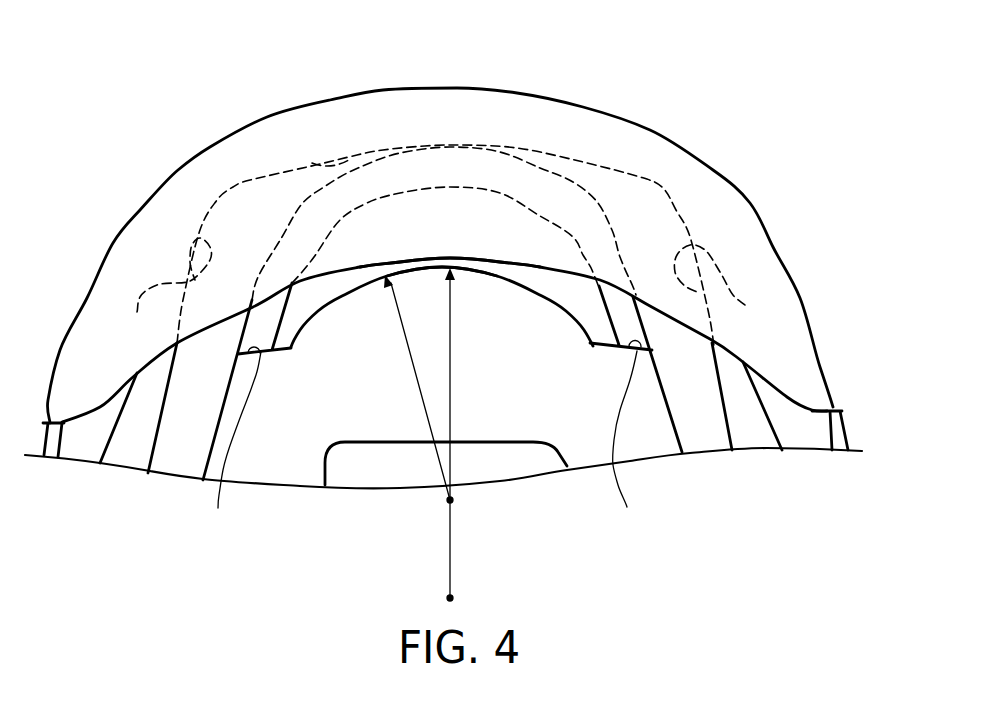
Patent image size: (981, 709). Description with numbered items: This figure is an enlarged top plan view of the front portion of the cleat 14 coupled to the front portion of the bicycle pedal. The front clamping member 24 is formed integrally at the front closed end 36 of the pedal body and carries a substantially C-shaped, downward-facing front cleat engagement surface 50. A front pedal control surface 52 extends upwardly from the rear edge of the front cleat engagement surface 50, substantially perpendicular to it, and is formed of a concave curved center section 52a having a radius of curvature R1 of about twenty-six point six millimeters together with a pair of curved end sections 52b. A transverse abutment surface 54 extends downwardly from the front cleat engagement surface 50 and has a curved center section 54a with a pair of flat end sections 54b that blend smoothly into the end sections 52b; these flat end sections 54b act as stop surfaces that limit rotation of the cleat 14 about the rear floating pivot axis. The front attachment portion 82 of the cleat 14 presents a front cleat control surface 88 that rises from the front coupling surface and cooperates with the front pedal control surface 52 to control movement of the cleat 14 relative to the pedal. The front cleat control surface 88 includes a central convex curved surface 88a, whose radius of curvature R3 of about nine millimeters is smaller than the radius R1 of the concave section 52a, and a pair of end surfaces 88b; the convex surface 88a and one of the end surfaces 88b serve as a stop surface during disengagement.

The cleat 14 is at (643, 472).
The front clamping member 24 is at (651, 110).
The front closed end 36 is at (312, 302).
The front cleat engagement surface 50 is at (637, 213).
The front pedal control surface 52 is at (588, 298).
The concave curved center section 52a is at (533, 270).
The curved end sections 52b is at (83, 421).
The abutment surface 54 is at (566, 140).
The curved center section 54a is at (357, 155).
The flat end sections 54b is at (159, 289).
The front attachment portion 82 is at (316, 410).
The front cleat control surface 88 is at (332, 292).
The central convex curved surface 88a is at (360, 280).
The end surfaces 88b is at (426, 439).
The radius of curvature R1 is at (452, 517).
The radius of curvature R3 is at (405, 356).